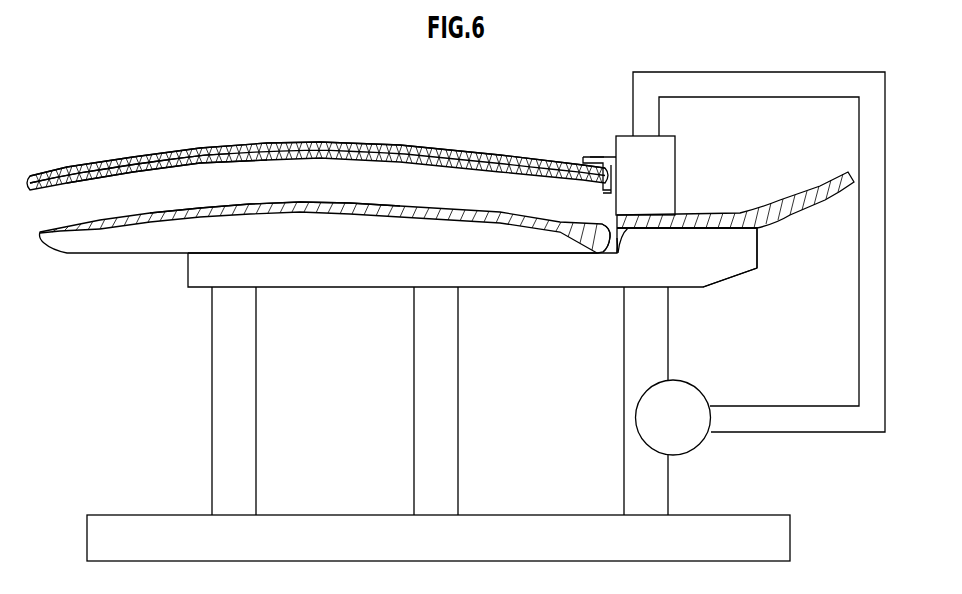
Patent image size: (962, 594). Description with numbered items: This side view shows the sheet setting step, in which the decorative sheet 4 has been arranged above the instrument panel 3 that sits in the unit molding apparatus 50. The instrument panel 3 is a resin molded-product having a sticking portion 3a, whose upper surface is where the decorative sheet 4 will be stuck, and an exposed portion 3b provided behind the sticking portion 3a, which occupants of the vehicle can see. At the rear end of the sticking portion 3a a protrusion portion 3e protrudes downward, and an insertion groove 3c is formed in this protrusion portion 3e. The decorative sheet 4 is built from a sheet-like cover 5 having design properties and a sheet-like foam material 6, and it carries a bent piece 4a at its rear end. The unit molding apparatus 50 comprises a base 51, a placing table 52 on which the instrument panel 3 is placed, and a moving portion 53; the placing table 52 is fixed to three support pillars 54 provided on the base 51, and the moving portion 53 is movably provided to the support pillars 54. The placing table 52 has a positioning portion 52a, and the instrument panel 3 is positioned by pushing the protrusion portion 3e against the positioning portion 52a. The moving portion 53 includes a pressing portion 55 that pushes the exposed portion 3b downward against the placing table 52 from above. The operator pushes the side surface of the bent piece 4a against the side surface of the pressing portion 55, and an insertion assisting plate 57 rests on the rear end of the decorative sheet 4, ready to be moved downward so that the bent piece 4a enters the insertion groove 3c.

The instrument panel 3 is at (97, 236).
The sticking portion 3a is at (270, 203).
The exposed portion 3b is at (757, 207).
The insertion groove 3c is at (615, 238).
The protrusion portion 3e is at (617, 250).
The decorative sheet 4 is at (478, 140).
The bent piece 4a is at (566, 167).
The sheet-like cover 5 is at (231, 142).
The sheet-like foam material 6 is at (150, 171).
The unit molding apparatus 50 is at (176, 378).
The base 51 is at (790, 540).
The placing table 52 is at (542, 279).
The positioning portion 52a is at (624, 240).
The moving portion 53 is at (796, 417).
The support pillar 54 is at (237, 447).
The pressing portion 55 is at (654, 173).
The insertion assisting plate 57 is at (597, 156).